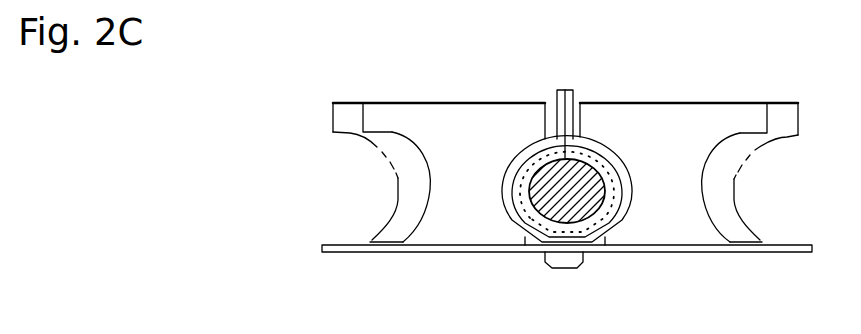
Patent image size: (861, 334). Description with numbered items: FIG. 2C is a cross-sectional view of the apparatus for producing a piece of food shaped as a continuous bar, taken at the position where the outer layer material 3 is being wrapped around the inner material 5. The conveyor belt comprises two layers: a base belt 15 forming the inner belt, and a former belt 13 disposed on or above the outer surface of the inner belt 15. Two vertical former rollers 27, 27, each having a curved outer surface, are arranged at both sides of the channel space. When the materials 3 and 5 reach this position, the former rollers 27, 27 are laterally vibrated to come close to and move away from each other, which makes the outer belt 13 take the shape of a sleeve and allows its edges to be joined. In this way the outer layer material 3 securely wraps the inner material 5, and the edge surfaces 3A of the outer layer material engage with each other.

The former roller 27 is at (400, 118).
The former belt 13 is at (573, 93).
The edge surfaces of the outer layer 3A is at (543, 136).
The outer layer material 3 is at (509, 216).
The food material 5 is at (584, 201).
The base belt 15 is at (707, 253).